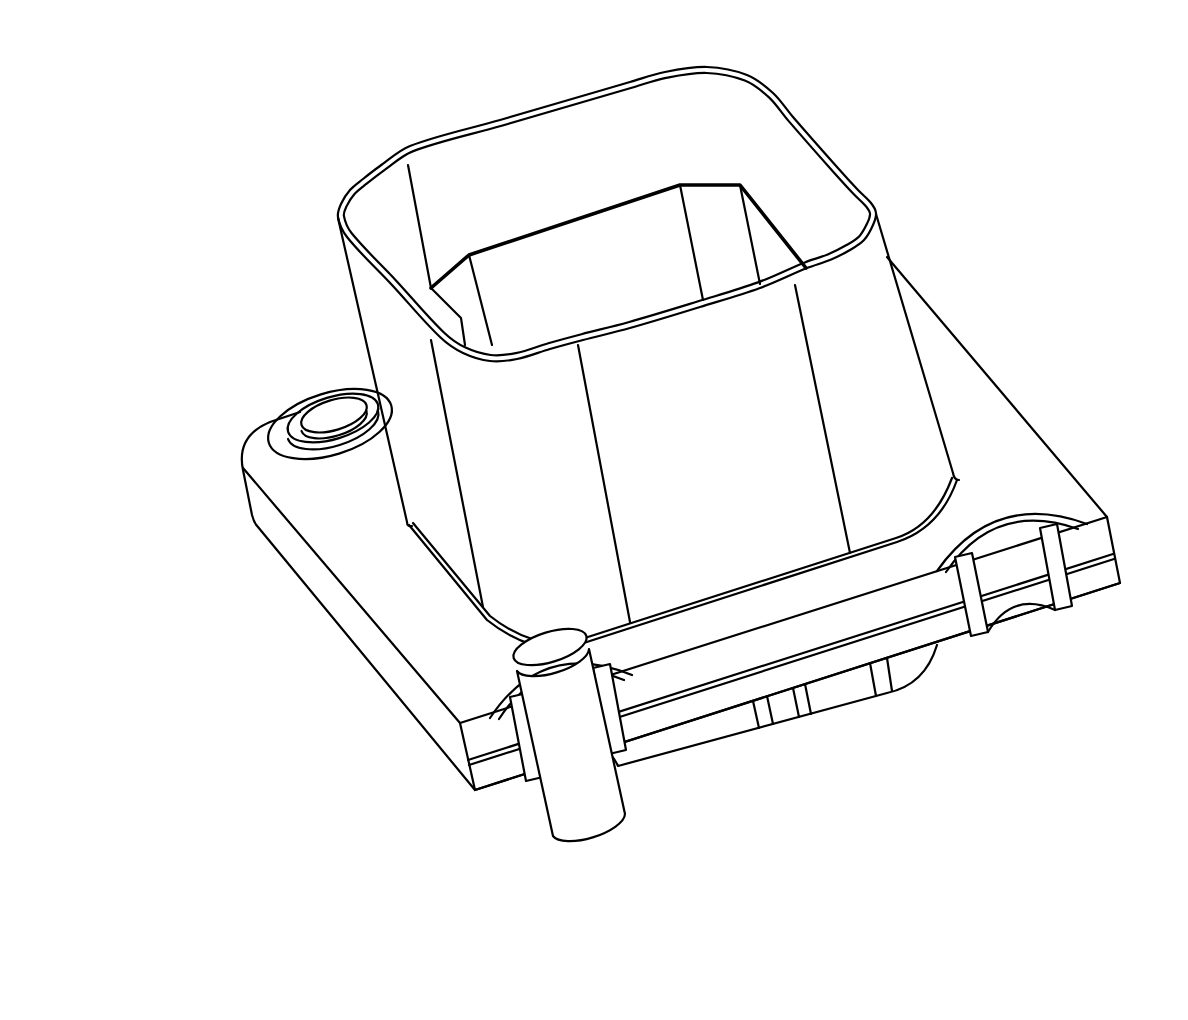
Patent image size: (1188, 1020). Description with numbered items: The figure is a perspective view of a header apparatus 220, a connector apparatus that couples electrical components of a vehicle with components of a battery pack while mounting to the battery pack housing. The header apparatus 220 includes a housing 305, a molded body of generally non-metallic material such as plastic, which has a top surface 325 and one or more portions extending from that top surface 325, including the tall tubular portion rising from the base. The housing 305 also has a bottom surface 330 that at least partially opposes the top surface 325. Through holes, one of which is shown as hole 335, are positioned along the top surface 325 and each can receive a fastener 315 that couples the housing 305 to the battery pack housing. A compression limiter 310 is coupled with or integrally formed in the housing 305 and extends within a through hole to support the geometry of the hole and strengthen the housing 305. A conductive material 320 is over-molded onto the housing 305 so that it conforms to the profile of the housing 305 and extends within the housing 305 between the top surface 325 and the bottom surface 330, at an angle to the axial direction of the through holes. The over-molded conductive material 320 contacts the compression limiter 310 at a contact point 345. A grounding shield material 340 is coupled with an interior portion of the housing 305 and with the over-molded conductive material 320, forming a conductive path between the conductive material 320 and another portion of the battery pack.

The header apparatus 220 is at (186, 126).
The housing 305 is at (446, 113).
The compression limiter 310 is at (312, 416).
The fastener 315 is at (578, 825).
The conductive material 320 is at (1114, 556).
The top surface 325 is at (410, 600).
The bottom surface 330 is at (482, 810).
The hole 335 is at (1024, 657).
The grounding shield material 340 is at (711, 170).
The contact point 345 is at (620, 713).